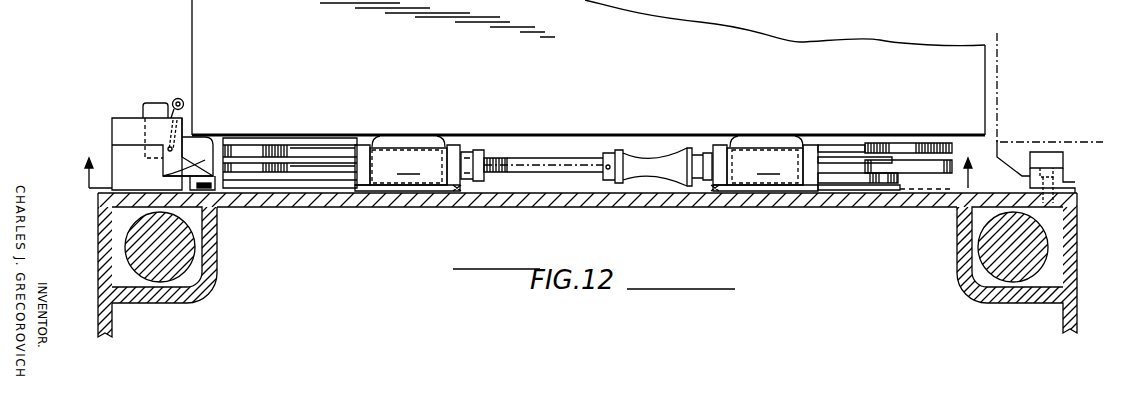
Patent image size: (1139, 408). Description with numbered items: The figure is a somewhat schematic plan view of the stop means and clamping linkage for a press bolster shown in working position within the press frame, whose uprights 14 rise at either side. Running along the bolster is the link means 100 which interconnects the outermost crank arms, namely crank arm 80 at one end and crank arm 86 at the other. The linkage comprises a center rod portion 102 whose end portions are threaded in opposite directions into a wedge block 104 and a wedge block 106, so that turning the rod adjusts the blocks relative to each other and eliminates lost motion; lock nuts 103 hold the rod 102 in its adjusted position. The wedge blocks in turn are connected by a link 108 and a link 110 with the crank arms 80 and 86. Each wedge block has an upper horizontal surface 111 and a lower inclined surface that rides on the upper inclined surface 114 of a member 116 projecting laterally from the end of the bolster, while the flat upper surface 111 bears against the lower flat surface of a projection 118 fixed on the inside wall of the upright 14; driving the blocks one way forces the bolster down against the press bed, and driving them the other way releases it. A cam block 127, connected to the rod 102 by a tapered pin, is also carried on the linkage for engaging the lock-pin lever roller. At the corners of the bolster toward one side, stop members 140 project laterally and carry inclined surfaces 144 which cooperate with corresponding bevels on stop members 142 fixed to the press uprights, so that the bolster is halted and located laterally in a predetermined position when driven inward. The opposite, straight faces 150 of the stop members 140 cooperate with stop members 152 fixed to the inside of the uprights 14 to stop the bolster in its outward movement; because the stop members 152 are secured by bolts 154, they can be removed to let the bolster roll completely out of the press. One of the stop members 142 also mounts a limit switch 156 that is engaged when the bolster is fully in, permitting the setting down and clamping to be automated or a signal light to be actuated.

The uprights 14 is at (584, 206).
The second crank arm 80 is at (907, 163).
The second crank arm 86 is at (265, 160).
The link means 100 is at (527, 155).
The center rod portion 102 is at (556, 158).
The lock nuts 103 is at (478, 150).
The wedge block 104 is at (428, 147).
The wedge block 106 is at (722, 145).
The link 108 is at (317, 178).
The link 110 is at (836, 180).
The upper horizontal surface 111 is at (714, 192).
The upper inclined surface 114 is at (757, 144).
The members 116 is at (790, 140).
The projections 118 is at (585, 166).
The cam block 127 is at (650, 152).
The stop members 140 is at (1013, 160).
The stop members 142 is at (126, 118).
The inclined surfaces 144 is at (176, 170).
The straight faces 150 is at (233, 152).
The stop members 152 is at (1067, 177).
The bolts 154 is at (1065, 166).
The limit switch 156 is at (157, 103).